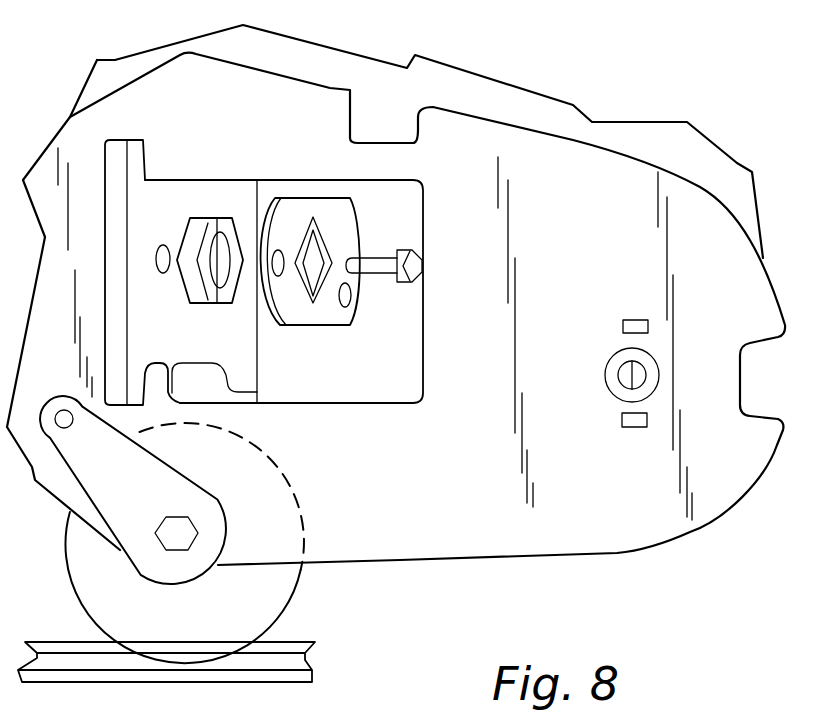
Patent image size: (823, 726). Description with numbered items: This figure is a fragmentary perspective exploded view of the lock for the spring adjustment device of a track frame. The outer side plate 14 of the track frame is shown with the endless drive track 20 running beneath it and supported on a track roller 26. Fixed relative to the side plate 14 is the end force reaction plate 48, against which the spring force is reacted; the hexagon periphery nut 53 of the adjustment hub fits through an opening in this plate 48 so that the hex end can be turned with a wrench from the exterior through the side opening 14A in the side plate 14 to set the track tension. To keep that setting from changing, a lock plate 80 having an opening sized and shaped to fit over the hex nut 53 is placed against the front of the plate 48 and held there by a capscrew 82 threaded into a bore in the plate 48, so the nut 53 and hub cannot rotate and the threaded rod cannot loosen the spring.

The side plate 14 is at (480, 512).
The side opening 14A is at (345, 380).
The endless drive track 20 is at (242, 663).
The track roller 26 is at (277, 577).
The end force reaction plate 48 is at (158, 208).
The hexagon periphery nut 53 is at (218, 217).
The lock plate 80 is at (333, 210).
The capscrew 82 is at (377, 270).